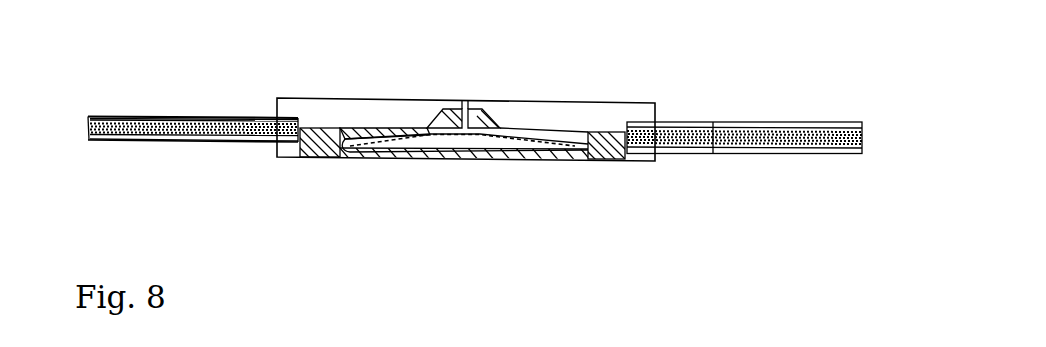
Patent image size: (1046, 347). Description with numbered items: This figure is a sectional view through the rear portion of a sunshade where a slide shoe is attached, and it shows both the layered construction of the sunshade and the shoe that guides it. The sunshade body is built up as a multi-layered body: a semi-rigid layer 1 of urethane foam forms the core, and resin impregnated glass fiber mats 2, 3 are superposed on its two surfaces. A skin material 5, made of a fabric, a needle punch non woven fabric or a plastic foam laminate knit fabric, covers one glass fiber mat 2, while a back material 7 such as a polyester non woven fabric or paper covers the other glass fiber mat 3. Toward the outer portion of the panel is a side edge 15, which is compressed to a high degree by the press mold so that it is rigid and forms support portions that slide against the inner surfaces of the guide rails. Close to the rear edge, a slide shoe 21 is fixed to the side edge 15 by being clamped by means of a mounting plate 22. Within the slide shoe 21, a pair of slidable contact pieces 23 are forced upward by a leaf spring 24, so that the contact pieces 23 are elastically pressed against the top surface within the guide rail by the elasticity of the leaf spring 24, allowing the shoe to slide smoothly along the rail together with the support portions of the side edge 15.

The semi-rigid layer 1 is at (240, 117).
The glass fiber mat 2 is at (218, 137).
The glass fiber mat 3 is at (152, 117).
The skin material 5 is at (152, 142).
The back material 7 is at (103, 117).
The side edge 15 is at (186, 112).
The slide shoe 21 is at (543, 158).
The mounting plate 22 is at (563, 101).
The slidable contact piece 23 is at (453, 101).
The leaf spring 24 is at (432, 158).